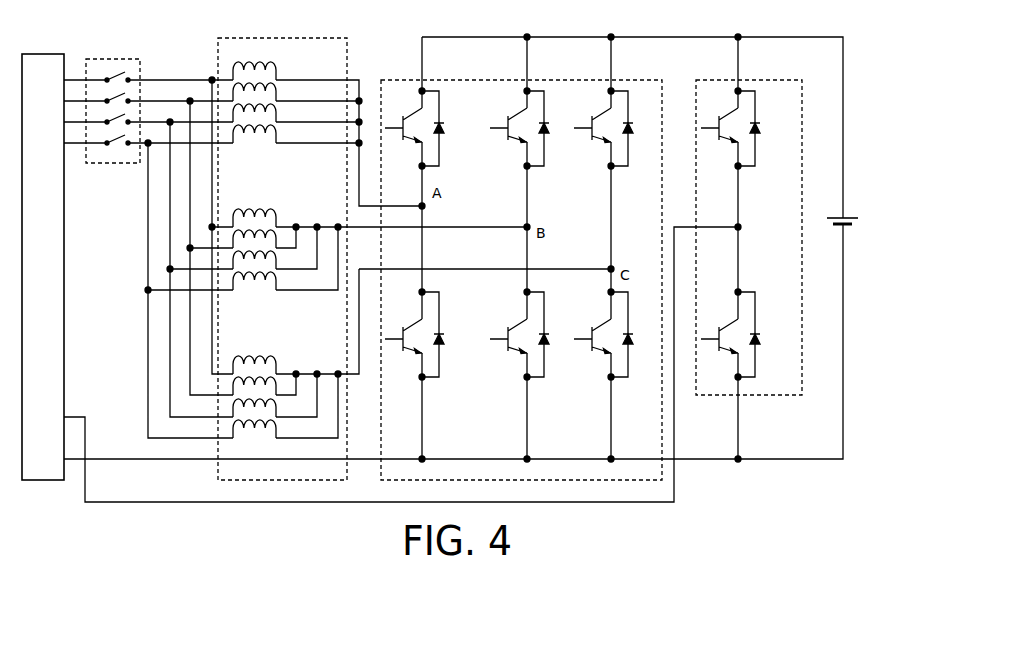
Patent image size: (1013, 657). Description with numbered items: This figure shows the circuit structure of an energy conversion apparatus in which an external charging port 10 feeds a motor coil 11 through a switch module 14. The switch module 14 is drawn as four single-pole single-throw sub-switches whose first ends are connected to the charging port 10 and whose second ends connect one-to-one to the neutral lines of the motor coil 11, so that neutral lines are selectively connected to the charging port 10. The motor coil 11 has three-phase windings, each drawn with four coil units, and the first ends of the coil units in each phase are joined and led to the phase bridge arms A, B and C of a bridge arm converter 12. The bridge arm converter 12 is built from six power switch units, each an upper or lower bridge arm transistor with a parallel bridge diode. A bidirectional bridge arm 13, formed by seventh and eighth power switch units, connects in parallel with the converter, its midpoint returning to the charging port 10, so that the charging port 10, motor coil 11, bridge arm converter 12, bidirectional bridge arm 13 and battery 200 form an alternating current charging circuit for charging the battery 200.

The charging port 10 is at (43, 54).
The motor coil 11 is at (283, 38).
The bridge arm converter 12 is at (465, 80).
The bidirectional bridge arm 13 is at (765, 80).
The switch module 14 is at (113, 59).
The battery 200 is at (853, 214).